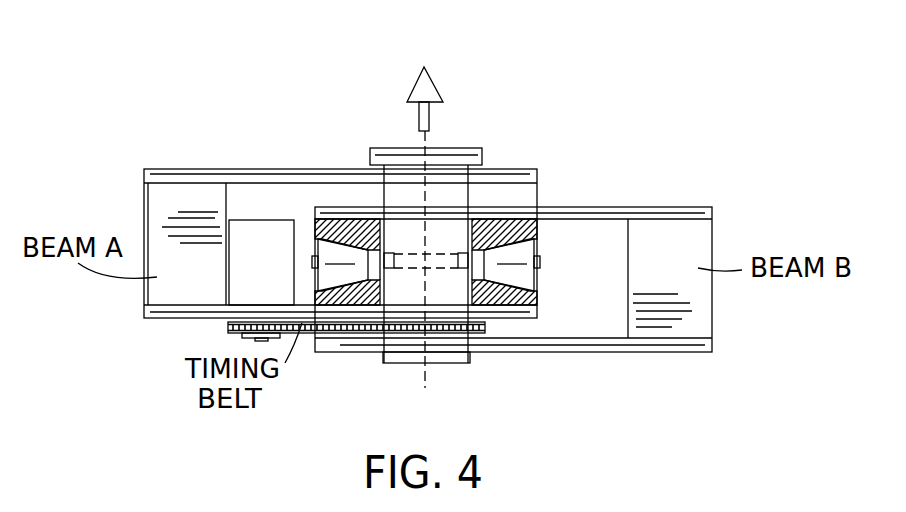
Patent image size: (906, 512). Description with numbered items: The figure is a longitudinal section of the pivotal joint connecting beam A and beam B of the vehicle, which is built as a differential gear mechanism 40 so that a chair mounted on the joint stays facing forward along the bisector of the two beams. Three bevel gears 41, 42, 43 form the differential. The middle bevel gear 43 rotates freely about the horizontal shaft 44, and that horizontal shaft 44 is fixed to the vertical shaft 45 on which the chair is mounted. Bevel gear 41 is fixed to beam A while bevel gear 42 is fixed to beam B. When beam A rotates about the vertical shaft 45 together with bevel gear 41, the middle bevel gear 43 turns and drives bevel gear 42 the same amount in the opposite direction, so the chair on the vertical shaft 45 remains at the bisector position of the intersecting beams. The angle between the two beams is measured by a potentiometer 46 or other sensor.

The differential gear mechanism 40 is at (524, 31).
The bevel gear 41 is at (332, 299).
The bevel gear 42 is at (522, 270).
The middle bevel gear 43 is at (538, 224).
The horizontal shaft 44 is at (542, 260).
The vertical shaft 45 is at (392, 257).
The potentiometer 46 is at (277, 275).